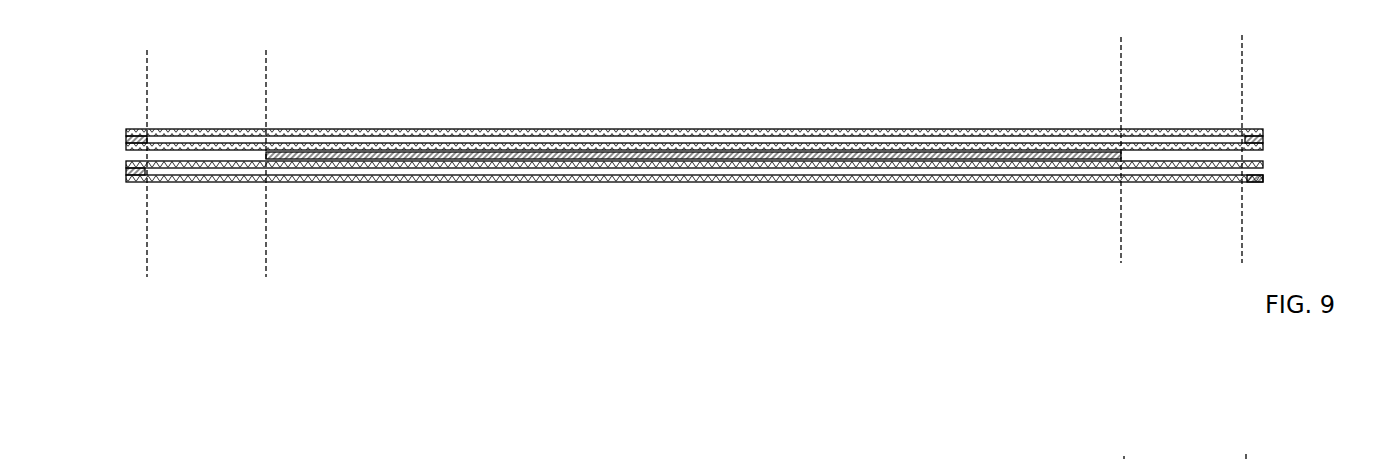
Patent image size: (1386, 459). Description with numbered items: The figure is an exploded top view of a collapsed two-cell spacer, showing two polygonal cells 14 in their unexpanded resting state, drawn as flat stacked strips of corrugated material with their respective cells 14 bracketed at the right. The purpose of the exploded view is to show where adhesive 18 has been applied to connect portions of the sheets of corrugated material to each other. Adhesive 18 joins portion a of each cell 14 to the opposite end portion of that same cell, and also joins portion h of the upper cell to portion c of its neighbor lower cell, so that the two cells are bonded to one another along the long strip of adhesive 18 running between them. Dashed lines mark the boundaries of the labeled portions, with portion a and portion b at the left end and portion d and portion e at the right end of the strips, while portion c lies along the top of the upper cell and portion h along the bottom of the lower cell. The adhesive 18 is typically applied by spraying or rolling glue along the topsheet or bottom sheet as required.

The cell 14 is at (1265, 151).
The adhesive 18 is at (125, 172).
The portion a is at (138, 129).
The zone b boundary b is at (158, 129).
The portion c is at (397, 132).
The zone d boundary d is at (1133, 131).
The zone e boundary e is at (1252, 131).
The portion h is at (528, 182).